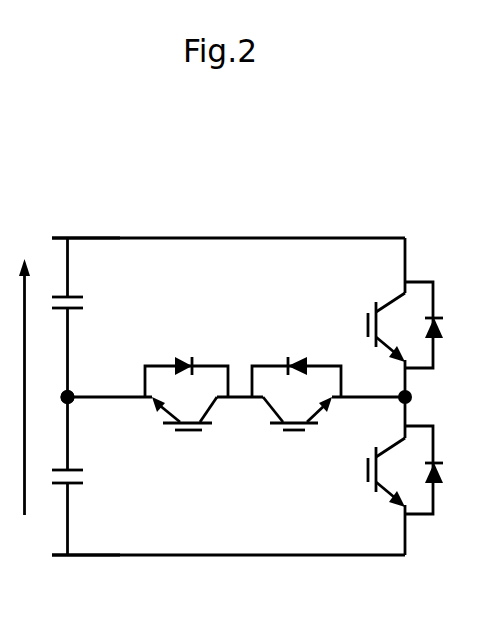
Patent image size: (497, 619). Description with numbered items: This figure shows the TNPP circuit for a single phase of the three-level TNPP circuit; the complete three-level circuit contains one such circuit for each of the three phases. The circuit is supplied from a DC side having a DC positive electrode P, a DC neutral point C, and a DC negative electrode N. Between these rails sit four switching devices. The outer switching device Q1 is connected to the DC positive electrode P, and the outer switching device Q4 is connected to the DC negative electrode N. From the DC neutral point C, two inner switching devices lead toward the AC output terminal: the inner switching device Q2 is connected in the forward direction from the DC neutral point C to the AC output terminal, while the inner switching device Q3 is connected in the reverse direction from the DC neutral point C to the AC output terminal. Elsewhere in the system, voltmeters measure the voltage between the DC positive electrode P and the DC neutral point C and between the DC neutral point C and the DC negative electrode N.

The outer switching device Q1 is at (385, 325).
The inner switching device Q2 is at (296, 412).
The inner switching device Q3 is at (186, 412).
The outer switching device Q4 is at (384, 470).
The DC positive electrode P is at (84, 220).
The DC neutral point C is at (56, 403).
The DC negative electrode N is at (84, 575).